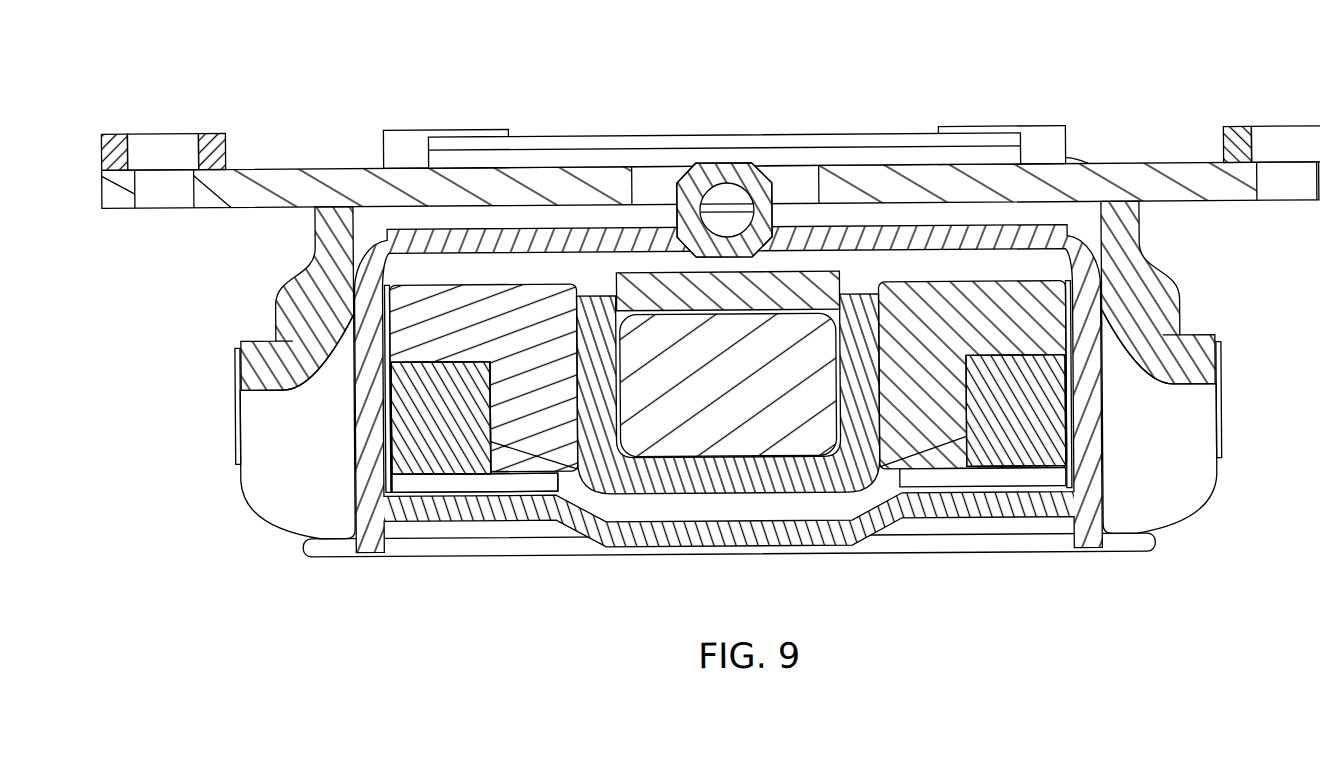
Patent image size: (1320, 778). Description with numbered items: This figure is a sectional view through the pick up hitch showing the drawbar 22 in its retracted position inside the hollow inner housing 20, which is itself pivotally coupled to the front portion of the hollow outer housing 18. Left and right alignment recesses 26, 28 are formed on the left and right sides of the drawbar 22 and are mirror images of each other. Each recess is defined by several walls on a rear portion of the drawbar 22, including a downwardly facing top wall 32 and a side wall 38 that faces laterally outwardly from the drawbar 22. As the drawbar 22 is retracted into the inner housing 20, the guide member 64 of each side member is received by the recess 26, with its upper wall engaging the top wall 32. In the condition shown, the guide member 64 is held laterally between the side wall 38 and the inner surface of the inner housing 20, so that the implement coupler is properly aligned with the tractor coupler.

The outer housing 18 is at (333, 160).
The inner housing 20 is at (1036, 213).
The drawbar 22 is at (557, 265).
The left alignment recess 26 is at (490, 362).
The right alignment recess 28 is at (976, 415).
The top wall 32 is at (437, 358).
The side wall 38 is at (492, 433).
The guide member 64 is at (490, 417).